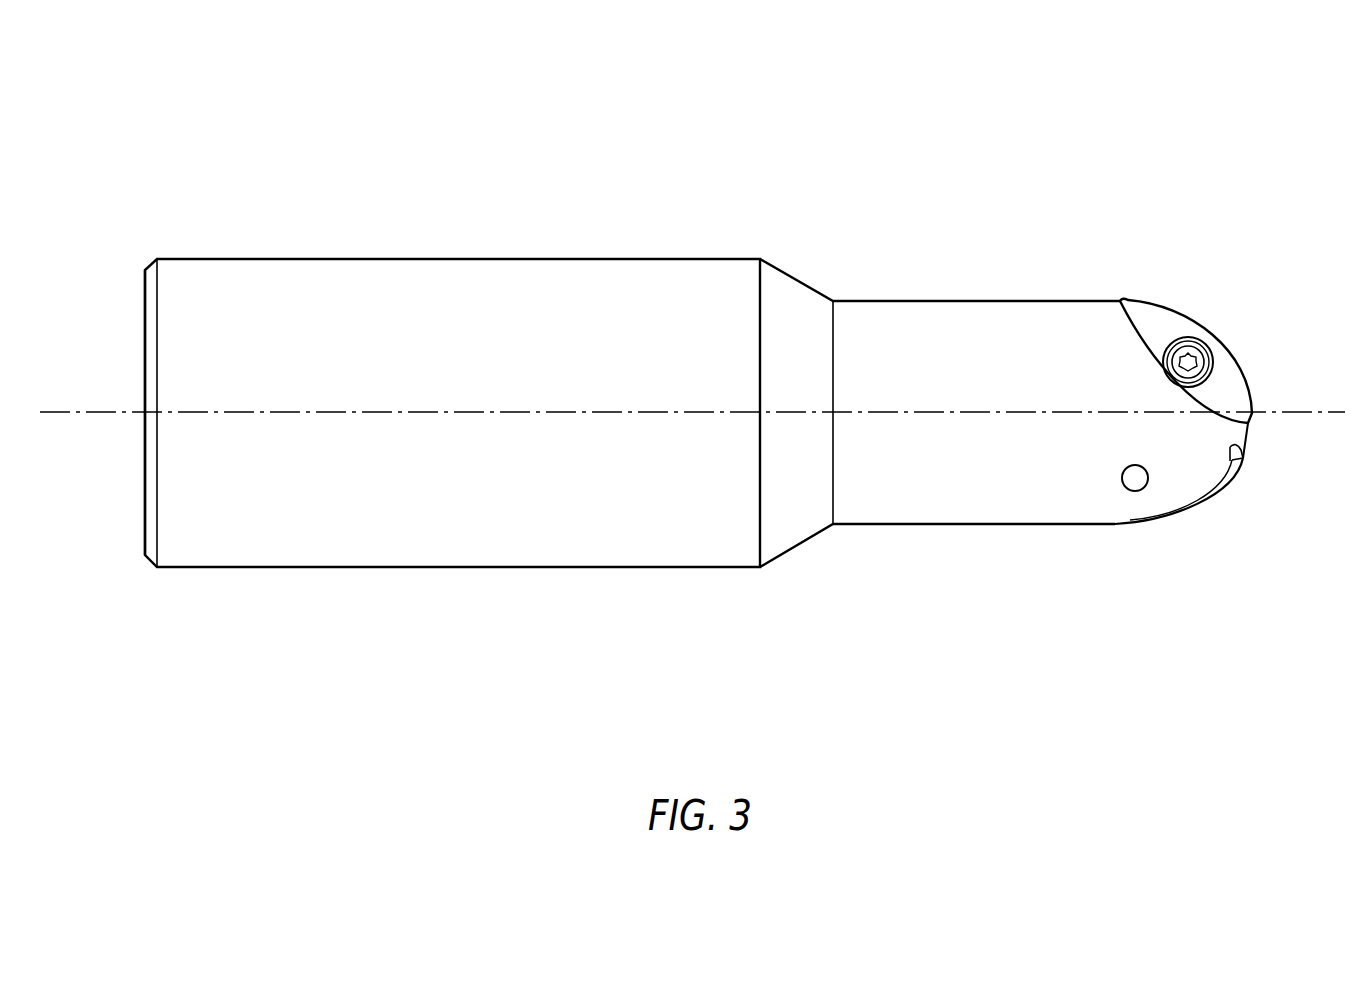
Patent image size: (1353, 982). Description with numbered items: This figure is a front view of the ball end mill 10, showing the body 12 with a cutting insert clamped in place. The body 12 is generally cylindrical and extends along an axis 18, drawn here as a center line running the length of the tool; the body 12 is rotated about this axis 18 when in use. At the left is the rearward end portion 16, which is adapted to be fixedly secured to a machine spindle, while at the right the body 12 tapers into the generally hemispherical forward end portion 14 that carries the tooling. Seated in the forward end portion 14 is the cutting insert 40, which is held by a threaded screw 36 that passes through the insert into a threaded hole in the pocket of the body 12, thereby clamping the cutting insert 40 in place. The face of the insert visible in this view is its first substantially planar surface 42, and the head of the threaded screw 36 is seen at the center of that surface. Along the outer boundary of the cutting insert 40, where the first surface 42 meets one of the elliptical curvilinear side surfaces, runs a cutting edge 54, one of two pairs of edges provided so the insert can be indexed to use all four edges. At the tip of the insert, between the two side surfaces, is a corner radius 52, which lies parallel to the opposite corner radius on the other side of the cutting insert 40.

The ball end mill 10 is at (170, 106).
The body 12 is at (245, 567).
The forward end portion 14 is at (1030, 552).
The rearward end portion 16 is at (292, 638).
The axis 18 is at (356, 412).
The threaded screw 36 is at (1216, 360).
The cutting insert 40 is at (1178, 284).
The first substantially planar surface 42 is at (1153, 318).
The corner radius 52 is at (1250, 428).
The cutting edge 54 is at (1213, 326).